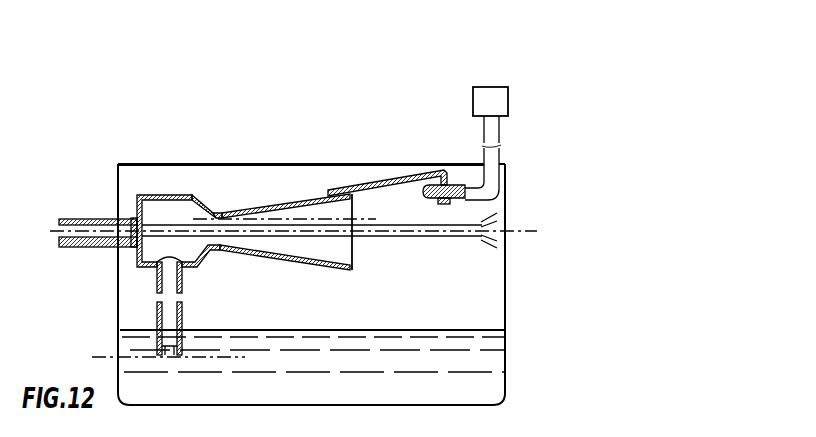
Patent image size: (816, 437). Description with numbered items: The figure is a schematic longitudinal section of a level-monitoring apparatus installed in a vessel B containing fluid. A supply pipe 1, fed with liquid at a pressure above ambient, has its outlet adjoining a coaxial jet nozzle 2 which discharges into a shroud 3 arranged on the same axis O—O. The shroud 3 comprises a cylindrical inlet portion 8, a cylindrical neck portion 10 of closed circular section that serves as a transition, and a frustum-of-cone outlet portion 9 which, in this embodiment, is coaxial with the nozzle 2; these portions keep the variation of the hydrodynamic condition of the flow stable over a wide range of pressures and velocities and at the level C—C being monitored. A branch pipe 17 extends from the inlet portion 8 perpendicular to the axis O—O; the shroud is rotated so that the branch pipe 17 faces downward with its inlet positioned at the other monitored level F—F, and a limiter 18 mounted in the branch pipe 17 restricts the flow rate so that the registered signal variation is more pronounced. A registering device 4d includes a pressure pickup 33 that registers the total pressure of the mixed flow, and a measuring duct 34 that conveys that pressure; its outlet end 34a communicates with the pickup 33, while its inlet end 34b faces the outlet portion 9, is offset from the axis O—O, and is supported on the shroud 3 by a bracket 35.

The supply pipe 1 is at (83, 218).
The jet nozzle 2 is at (136, 220).
The shroud 3 is at (140, 268).
The inlet portion 8 is at (191, 198).
The neck portion 10 is at (223, 216).
The outlet portion 9 is at (300, 207).
The bracket 35 is at (370, 183).
The measuring duct 34 is at (453, 185).
The outlet end of the measuring duct 34a is at (497, 157).
The inlet end of the measuring duct 34b is at (437, 205).
The pressure pickup 33 is at (473, 104).
The registering device 4d is at (496, 135).
The branch pipe 17 is at (157, 290).
The limiter 18 is at (182, 340).
The vessel B is at (508, 356).
The axis O— O is at (294, 232).
The level C— C is at (289, 219).
The level F— F is at (171, 358).